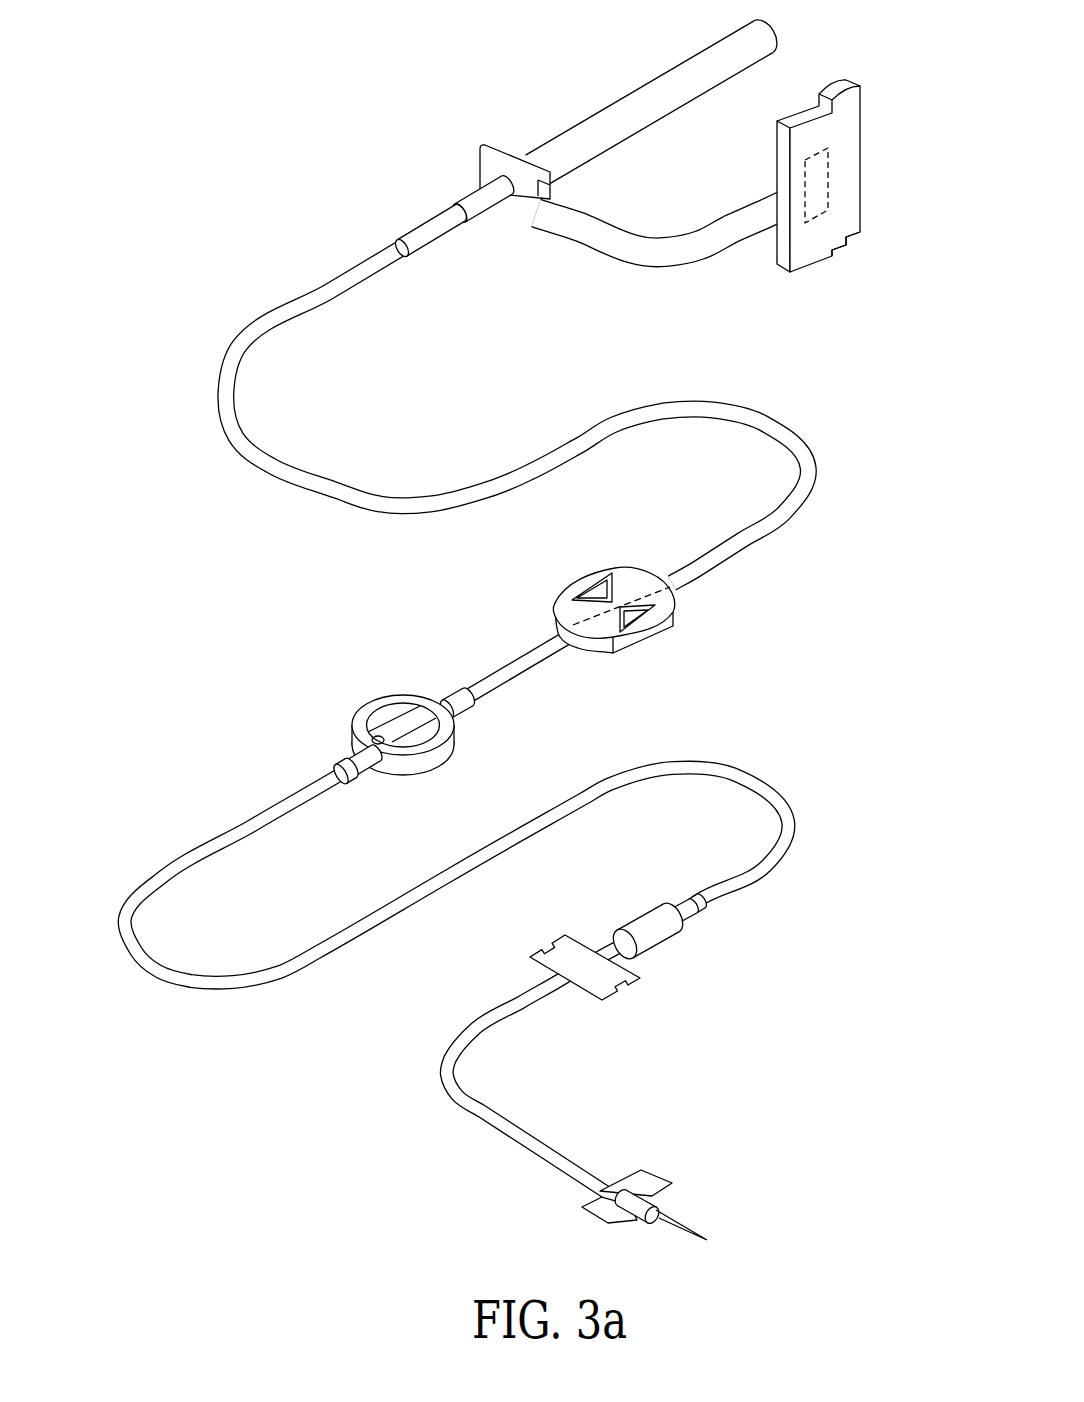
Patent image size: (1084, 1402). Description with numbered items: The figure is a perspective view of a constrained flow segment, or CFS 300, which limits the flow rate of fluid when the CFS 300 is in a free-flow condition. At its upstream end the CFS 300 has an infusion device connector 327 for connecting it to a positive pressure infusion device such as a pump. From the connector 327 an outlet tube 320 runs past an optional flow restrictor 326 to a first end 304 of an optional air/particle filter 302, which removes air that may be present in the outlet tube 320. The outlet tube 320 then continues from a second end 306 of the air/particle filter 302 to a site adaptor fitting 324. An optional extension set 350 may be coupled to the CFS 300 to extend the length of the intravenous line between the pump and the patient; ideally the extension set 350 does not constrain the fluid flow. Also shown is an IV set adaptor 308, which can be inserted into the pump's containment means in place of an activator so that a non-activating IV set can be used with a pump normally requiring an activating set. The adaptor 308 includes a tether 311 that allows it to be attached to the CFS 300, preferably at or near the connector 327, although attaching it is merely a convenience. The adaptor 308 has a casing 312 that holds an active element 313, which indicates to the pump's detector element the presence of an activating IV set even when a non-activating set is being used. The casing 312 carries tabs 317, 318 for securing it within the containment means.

The constrained flow segment 300 is at (525, 620).
The air/particle filter 302 is at (382, 700).
The first end 304 is at (463, 715).
The second end 306 is at (328, 768).
The IV set adaptor 308 is at (659, 163).
The tether 311 is at (640, 233).
The casing 312 is at (851, 192).
The active element 313 is at (828, 188).
The tab 317 is at (857, 98).
The tab 318 is at (860, 233).
The outlet tube 320 is at (333, 278).
The site adaptor fitting 324 is at (648, 953).
The flow restrictor 326 is at (670, 623).
The infusion device connector 327 is at (780, 30).
The extension set 350 is at (478, 1123).